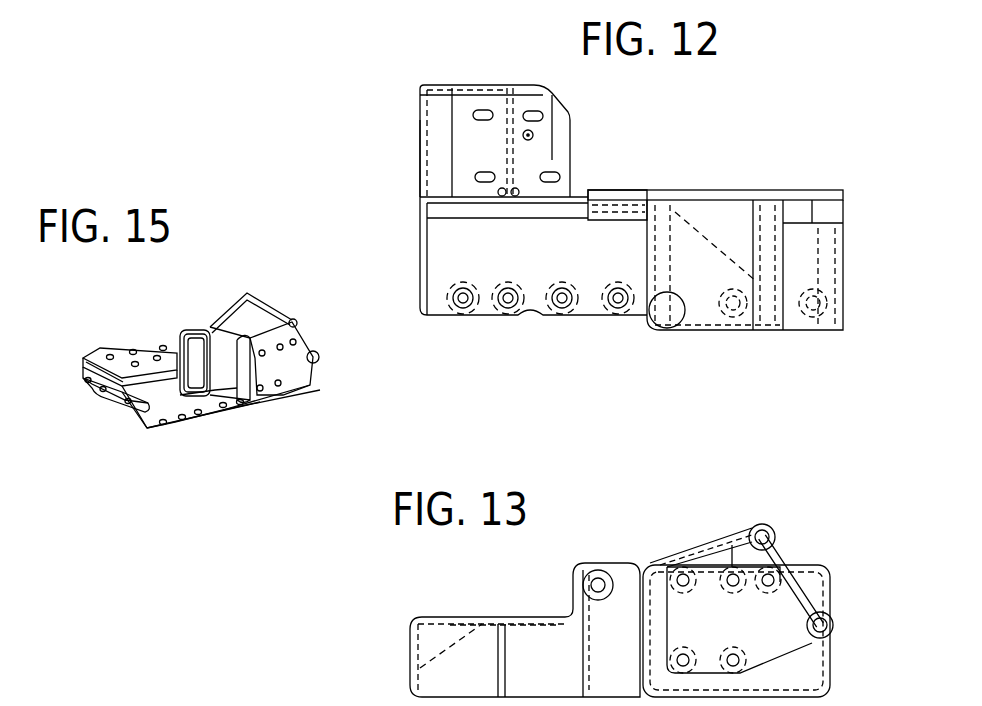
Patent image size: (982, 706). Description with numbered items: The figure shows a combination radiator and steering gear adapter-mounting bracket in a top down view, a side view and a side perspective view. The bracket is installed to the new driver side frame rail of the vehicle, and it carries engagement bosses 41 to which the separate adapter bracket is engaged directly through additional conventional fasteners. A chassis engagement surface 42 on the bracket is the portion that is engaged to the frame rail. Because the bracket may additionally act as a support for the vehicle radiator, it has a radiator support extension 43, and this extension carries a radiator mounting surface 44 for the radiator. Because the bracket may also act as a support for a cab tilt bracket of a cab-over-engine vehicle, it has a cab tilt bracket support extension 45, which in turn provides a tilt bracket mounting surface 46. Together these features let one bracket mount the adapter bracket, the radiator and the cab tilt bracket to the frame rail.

In FIG. 12, the engagement bosses 41 is at (656, 190).
In FIG. 13, the engagement bosses 41 is at (592, 569).
In FIG. 12, the chassis engagement surface 42 is at (718, 338).
In FIG. 13, the chassis engagement surface 42 is at (736, 621).
In FIG. 15, the chassis engagement surface 42 is at (290, 363).
In FIG. 12, the radiator support extension 43 is at (490, 322).
In FIG. 15, the radiator support extension 43 is at (171, 431).
In FIG. 12, the radiator mounting surface 44 is at (453, 250).
In FIG. 13, the radiator mounting surface 44 is at (525, 630).
In FIG. 15, the radiator mounting surface 44 is at (205, 398).
In FIG. 12, the cab tilt bracket support extension 45 is at (418, 147).
In FIG. 15, the cab tilt bracket support extension 45 is at (99, 345).
In FIG. 12, the tilt bracket mounting surface 46 is at (564, 153).
In FIG. 15, the tilt bracket mounting surface 46 is at (143, 350).